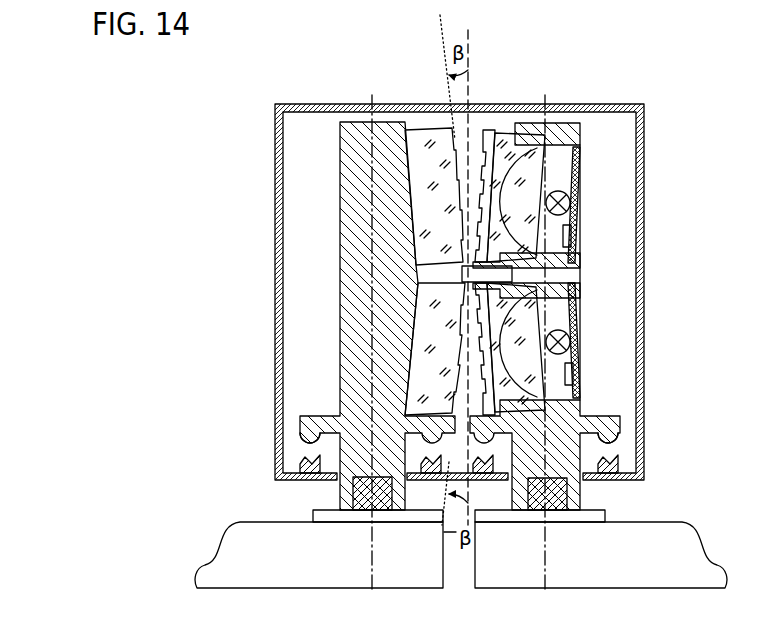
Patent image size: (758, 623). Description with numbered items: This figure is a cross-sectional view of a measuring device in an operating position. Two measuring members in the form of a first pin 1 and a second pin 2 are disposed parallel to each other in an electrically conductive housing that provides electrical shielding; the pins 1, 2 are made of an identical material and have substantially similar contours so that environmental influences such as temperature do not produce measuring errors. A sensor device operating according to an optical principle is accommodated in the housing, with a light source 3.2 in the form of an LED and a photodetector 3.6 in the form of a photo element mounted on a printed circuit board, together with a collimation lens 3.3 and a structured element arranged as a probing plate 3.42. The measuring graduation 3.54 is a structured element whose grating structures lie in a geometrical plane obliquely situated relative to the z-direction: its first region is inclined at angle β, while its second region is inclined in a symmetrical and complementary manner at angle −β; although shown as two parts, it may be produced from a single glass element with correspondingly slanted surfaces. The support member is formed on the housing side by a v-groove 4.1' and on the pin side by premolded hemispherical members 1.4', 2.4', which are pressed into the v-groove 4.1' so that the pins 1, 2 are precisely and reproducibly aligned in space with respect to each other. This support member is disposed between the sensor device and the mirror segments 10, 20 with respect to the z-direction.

The first pin 1 is at (364, 378).
The second pin 2 is at (541, 446).
The measuring graduation 3.54 is at (377, 271).
The probing plate 3.42 is at (594, 258).
The collimation lens 3.3 is at (540, 163).
The light source 3.2 is at (566, 203).
The photodetector 3.6 is at (569, 238).
The hemispherical member 1.4' is at (264, 438).
The hemispherical member 2.4' is at (649, 436).
The v-groove 4.1' is at (458, 469).
The mirror segment 10 is at (415, 557).
The mirror segment 20 is at (512, 557).